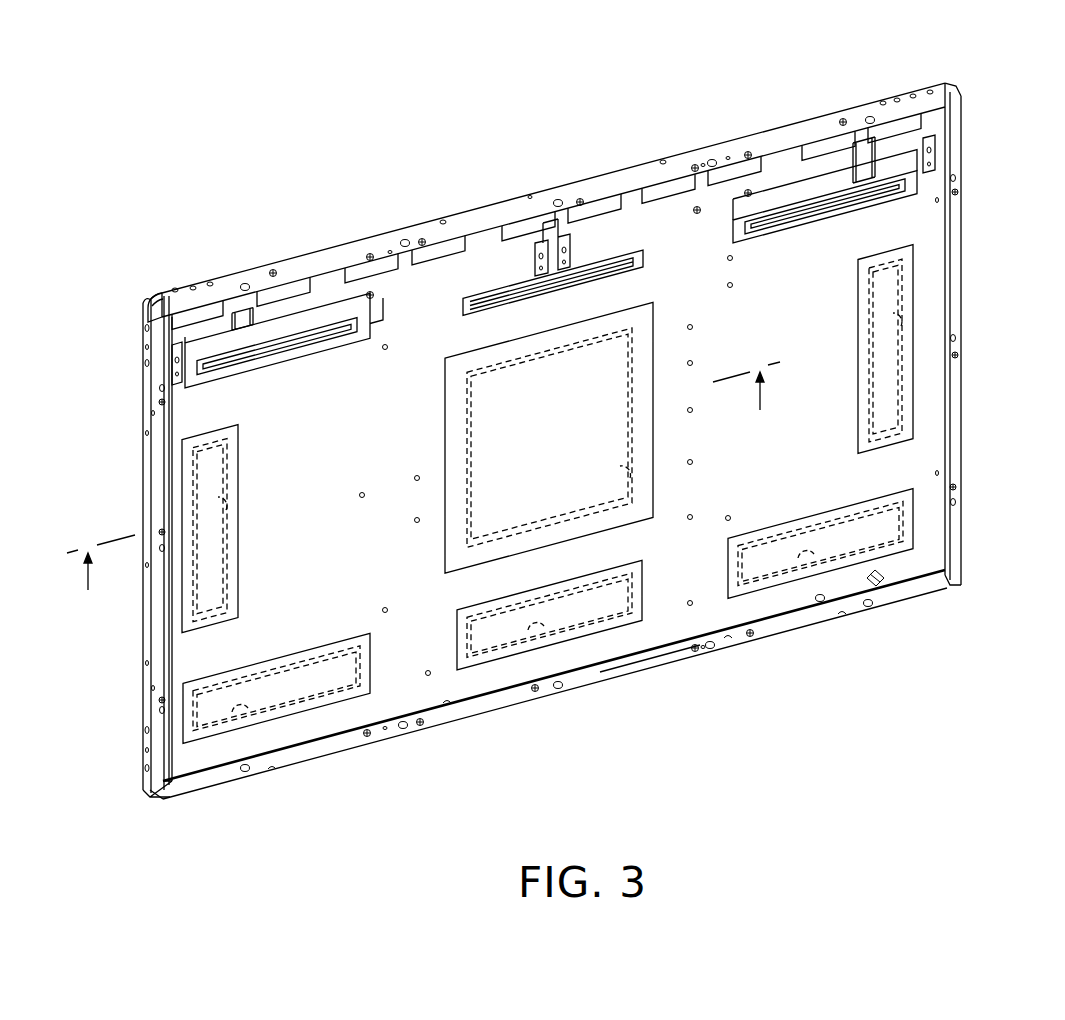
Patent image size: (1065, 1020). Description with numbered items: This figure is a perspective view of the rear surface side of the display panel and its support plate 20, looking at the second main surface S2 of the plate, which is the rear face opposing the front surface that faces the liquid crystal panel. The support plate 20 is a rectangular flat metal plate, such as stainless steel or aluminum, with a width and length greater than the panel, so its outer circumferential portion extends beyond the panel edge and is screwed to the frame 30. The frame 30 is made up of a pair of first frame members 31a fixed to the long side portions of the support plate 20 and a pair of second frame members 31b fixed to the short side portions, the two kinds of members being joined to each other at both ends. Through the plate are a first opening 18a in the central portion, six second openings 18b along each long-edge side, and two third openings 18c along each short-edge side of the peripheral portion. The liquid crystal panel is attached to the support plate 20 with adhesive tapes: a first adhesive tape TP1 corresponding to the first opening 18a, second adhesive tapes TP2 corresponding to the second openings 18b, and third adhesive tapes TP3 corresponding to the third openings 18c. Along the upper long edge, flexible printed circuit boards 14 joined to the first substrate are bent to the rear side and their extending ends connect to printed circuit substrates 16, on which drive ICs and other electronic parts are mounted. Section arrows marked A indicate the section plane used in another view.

The flexible printed circuit board 14 is at (273, 293).
The printed circuit substrate 16 is at (317, 318).
The first opening 18a is at (635, 482).
The second opening 18b is at (236, 716).
The third opening 18c is at (232, 512).
The support plate 20 is at (443, 667).
The frame 30 is at (569, 433).
The first frame member 31a is at (783, 140).
The second frame member 31b is at (158, 618).
The first adhesive tape TP1 is at (458, 432).
The second adhesive tape TP2 is at (262, 365).
The third adhesive tape TP3 is at (230, 578).
The second main surface S2 is at (708, 613).
The section line A is at (423, 491).